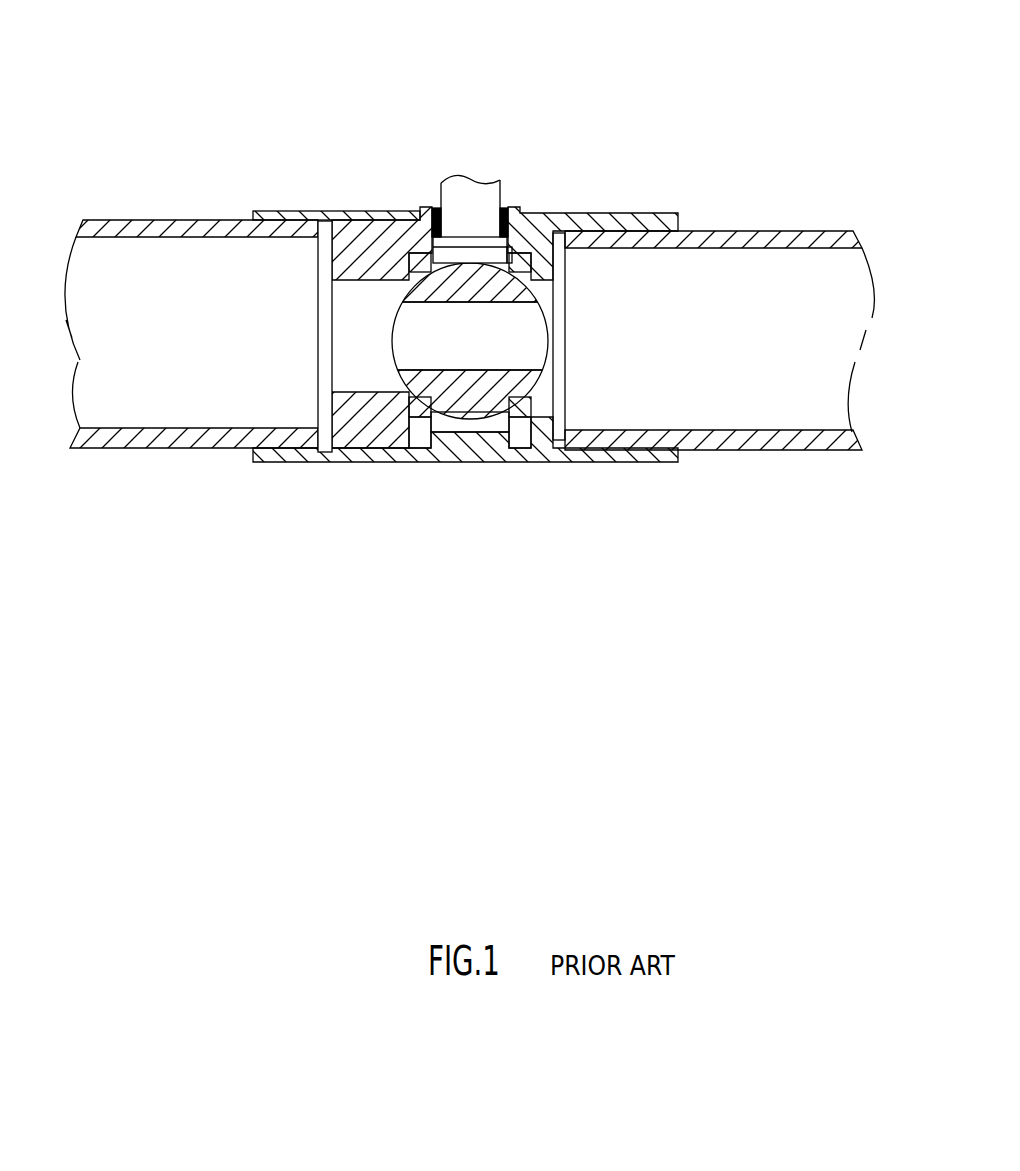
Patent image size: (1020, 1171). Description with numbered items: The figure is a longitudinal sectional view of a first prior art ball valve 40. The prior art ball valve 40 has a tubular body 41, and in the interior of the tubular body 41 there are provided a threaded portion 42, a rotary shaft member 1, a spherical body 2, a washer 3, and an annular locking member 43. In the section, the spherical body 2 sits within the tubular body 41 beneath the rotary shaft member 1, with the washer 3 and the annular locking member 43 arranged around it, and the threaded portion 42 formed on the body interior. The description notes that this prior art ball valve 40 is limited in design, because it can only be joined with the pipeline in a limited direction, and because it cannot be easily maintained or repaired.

The rotary shaft member 1 is at (489, 198).
The spherical body 2 is at (527, 323).
The washer 3 is at (527, 256).
The prior art ball valve 40 is at (584, 110).
The tubular body 41 is at (526, 452).
The threaded portion 42 is at (323, 235).
The annular locking member 43 is at (372, 238).